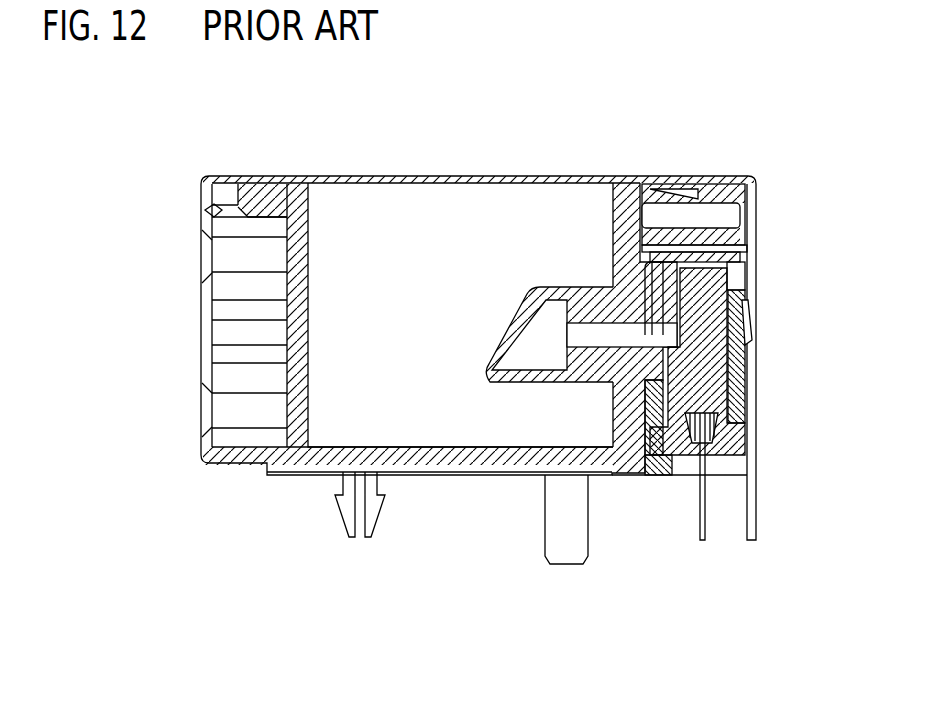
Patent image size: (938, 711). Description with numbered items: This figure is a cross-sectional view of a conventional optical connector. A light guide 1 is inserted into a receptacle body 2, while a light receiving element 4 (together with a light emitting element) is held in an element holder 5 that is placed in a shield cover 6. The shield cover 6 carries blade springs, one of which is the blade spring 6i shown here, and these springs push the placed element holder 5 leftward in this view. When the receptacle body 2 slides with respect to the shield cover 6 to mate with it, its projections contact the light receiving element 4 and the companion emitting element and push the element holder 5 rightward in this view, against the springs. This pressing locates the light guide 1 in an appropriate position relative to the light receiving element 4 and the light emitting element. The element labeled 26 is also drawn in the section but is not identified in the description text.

The light guide 1 is at (623, 335).
The receptacle body 2 is at (394, 240).
The light receiving element 4 is at (703, 383).
The element holder 5 is at (703, 433).
The shield cover 6 is at (752, 467).
The blade spring 6i is at (752, 335).
The metal bracket 26 is at (658, 357).